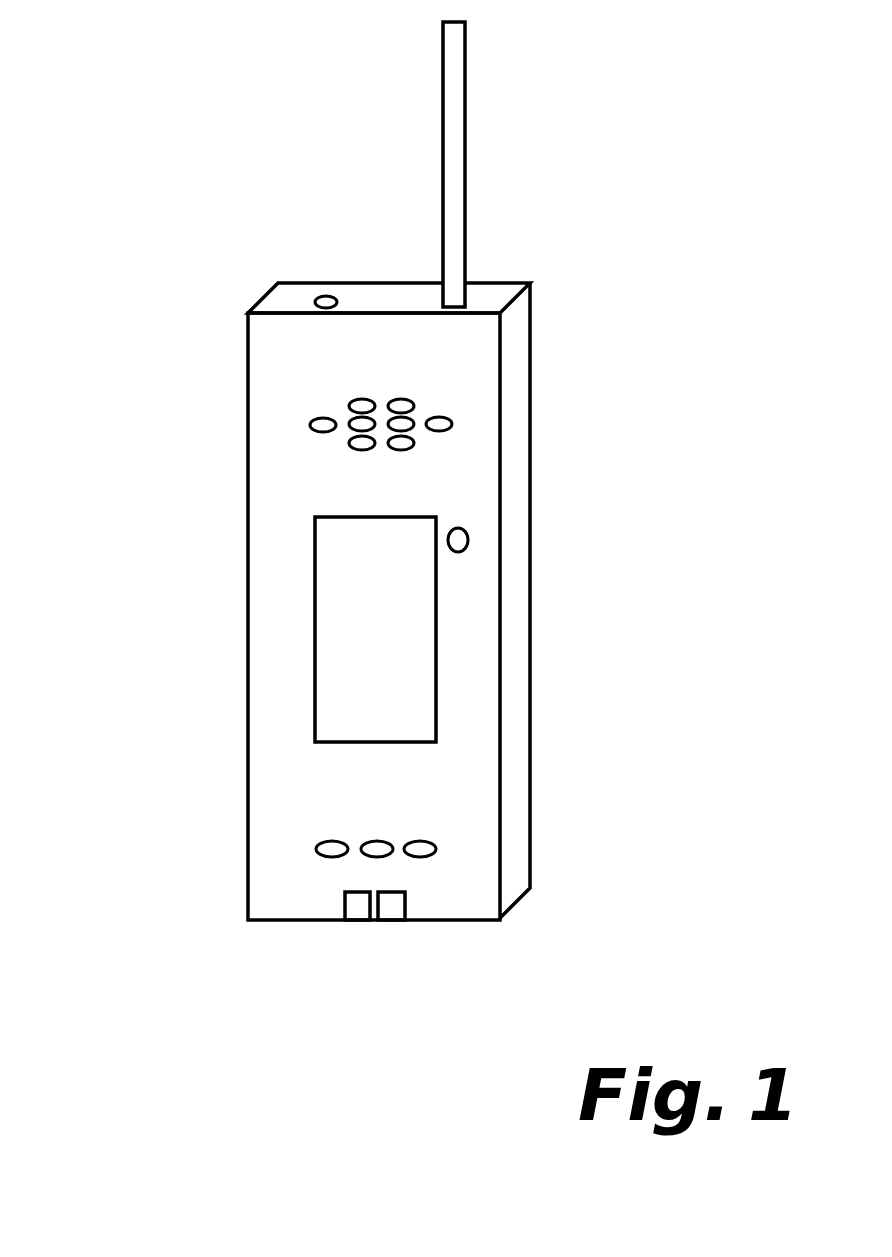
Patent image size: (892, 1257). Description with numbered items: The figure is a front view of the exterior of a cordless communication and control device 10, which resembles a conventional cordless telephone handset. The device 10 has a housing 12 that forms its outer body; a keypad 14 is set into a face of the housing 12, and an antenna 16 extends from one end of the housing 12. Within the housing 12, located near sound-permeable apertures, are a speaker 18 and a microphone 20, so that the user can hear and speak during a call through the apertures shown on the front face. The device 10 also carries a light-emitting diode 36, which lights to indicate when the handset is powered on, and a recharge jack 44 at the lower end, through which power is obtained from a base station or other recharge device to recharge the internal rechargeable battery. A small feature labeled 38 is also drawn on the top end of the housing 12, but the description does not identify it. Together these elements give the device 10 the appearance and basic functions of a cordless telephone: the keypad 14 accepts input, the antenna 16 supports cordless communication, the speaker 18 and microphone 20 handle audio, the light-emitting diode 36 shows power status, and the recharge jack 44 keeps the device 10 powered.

The cordless communication and control device 10 is at (136, 296).
The housing 12 is at (246, 516).
The keypad 14 is at (315, 680).
The antenna 16 is at (469, 173).
The speaker 18 is at (444, 400).
The microphone 20 is at (444, 823).
The light-emitting diode 36 is at (469, 540).
The indicator 38 is at (326, 296).
The recharge jack 44 is at (361, 942).